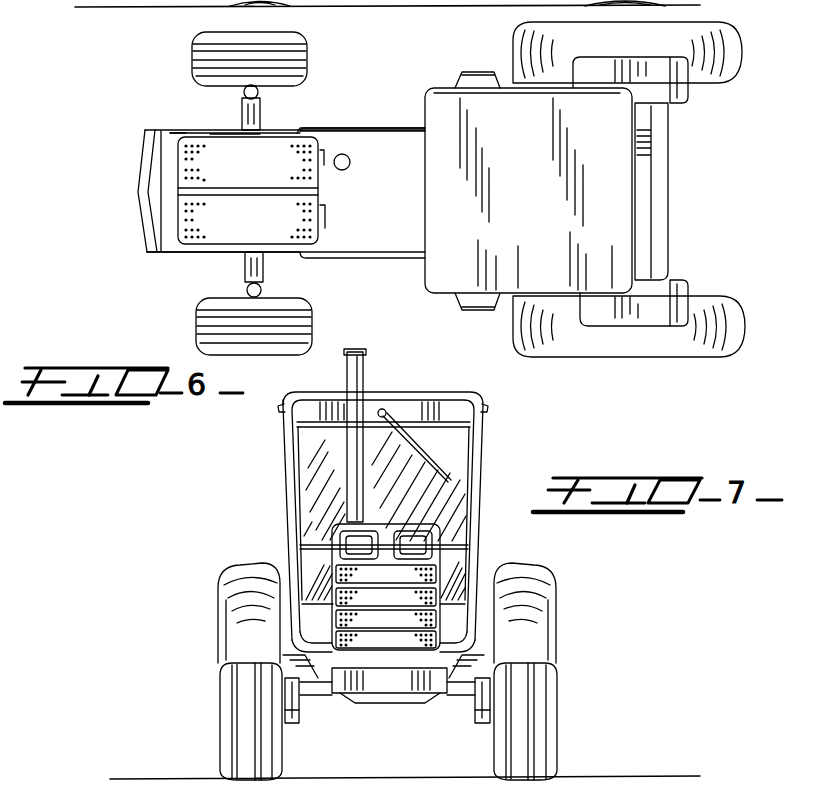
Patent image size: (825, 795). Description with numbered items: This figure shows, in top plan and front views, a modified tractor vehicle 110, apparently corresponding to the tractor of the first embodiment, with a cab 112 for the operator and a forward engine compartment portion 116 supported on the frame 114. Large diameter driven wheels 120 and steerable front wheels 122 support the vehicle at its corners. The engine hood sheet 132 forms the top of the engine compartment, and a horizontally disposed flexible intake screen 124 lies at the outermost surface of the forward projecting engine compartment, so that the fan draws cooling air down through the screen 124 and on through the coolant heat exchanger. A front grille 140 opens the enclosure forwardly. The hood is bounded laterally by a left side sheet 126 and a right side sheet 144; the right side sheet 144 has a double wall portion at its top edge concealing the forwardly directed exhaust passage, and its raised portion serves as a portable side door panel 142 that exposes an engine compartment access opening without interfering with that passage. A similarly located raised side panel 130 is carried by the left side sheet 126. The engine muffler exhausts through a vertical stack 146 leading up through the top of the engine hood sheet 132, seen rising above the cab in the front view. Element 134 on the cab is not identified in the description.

In FIG. 6, the tractor 110 is at (106, 182).
In FIG. 7, the tractor 110 is at (232, 472).
In FIG. 6, the operator cab 112 is at (523, 290).
In FIG. 7, the operator cab 112 is at (487, 452).
In FIG. 6, the frame 114 is at (630, 191).
In FIG. 7, the frame 114 is at (458, 658).
In FIG. 6, the front grille assembly 116 is at (183, 116).
In FIG. 7, the front grille assembly 116 is at (462, 563).
In FIG. 6, the rear wheel 120 is at (782, 314).
In FIG. 7, the rear wheel 120 is at (534, 604).
In FIG. 6, the front wheel 122 is at (305, 321).
In FIG. 7, the front wheel 122 is at (278, 769).
In FIG. 6, the intake screen 124 is at (182, 165).
In FIG. 7, the intake screen 124 is at (385, 518).
In FIG. 6, the left side sheet 126 is at (208, 256).
In FIG. 6, the raised side panel 130 is at (325, 255).
In FIG. 6, the engine hood sheet 132 is at (376, 158).
In FIG. 7, the windshield 134 is at (318, 452).
In FIG. 7, the front grille 140 is at (380, 654).
In FIG. 6, the portable side door panel 142 is at (323, 128).
In FIG. 6, the right side sheet 144 is at (268, 134).
In FIG. 6, the vertical stack 146 is at (349, 169).
In FIG. 7, the vertical stack 146 is at (356, 376).